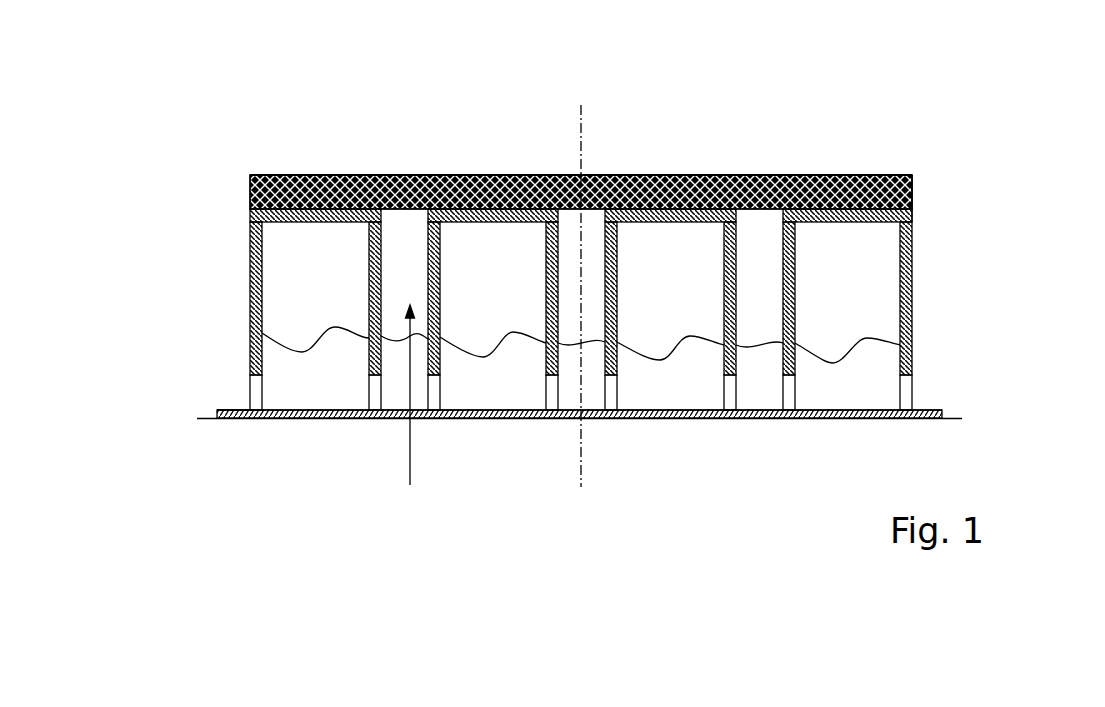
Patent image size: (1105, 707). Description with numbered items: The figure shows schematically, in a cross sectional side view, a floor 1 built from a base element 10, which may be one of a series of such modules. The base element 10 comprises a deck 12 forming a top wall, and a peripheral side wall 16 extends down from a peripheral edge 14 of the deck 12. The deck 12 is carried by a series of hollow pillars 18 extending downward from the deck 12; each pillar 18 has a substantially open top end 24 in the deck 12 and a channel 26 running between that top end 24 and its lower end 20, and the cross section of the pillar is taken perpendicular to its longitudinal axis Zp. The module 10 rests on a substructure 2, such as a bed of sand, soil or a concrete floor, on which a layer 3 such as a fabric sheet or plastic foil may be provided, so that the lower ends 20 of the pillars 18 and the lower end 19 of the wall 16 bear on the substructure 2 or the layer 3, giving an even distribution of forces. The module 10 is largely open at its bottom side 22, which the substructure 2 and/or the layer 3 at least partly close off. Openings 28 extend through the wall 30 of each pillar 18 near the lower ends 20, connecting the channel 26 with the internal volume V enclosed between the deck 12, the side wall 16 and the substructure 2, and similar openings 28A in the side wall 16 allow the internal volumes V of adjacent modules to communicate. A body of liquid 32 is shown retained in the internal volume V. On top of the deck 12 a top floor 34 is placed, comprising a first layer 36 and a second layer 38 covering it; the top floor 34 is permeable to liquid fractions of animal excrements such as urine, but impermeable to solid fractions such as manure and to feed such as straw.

The floor 1 is at (162, 125).
The substructure 2 is at (953, 419).
The layer 3 is at (930, 410).
The base element 10 is at (197, 308).
The deck 12 is at (481, 182).
The peripheral edge 14 is at (250, 208).
The peripheral side wall 16 is at (912, 260).
The pillar 18 is at (795, 268).
The lower end of the wall 19 is at (219, 399).
The lower end of the pillar 20 is at (449, 426).
The bottom side 22 is at (328, 431).
The open top end 24 is at (410, 194).
The channel 26 is at (410, 421).
The opening 28 is at (610, 390).
The opening in the side wall 28A is at (257, 390).
The wall of the pillar 30 is at (733, 380).
The body of liquid 32 is at (853, 383).
The top floor 34 is at (207, 190).
The first layer 36 is at (912, 197).
The second layer 38 is at (800, 177).
The internal volume V is at (510, 310).
The longitudinal axis Zp is at (581, 118).